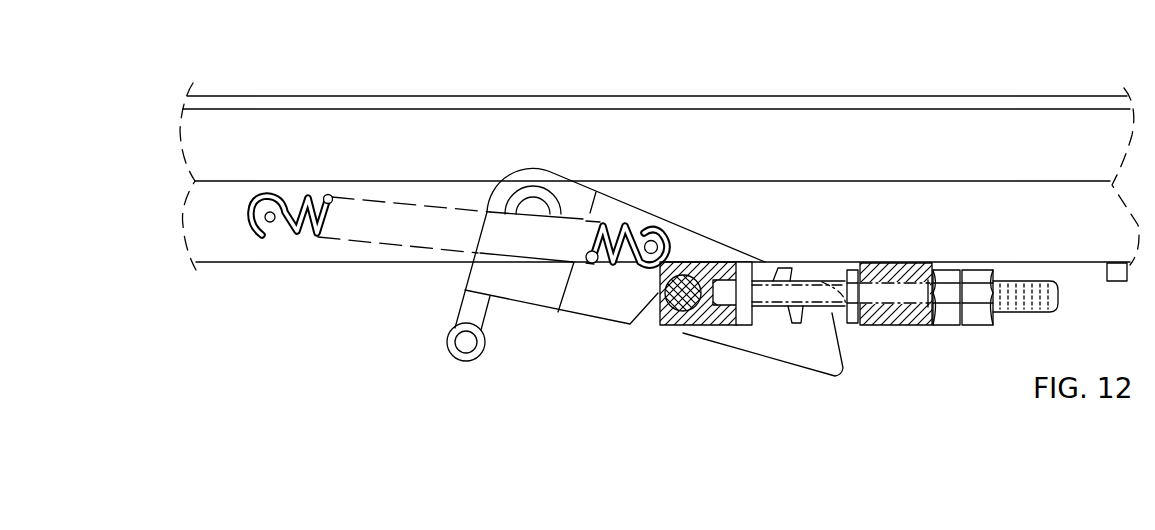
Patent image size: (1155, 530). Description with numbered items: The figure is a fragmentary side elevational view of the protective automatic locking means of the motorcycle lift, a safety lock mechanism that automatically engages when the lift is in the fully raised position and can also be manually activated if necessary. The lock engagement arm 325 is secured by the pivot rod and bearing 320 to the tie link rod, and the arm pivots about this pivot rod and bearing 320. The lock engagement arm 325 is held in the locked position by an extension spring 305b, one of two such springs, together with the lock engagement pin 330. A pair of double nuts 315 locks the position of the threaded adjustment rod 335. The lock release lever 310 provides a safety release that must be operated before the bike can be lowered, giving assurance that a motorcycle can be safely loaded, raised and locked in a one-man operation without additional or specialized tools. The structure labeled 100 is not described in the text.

The rail / guide member 100 is at (398, 108).
The extension spring 305b is at (295, 233).
The lock release lever 310 is at (445, 339).
The double nuts 315 is at (977, 327).
The pivot rod and bearing 320 is at (537, 193).
The lock engagement arm 325 is at (685, 228).
The lock engagement pin 330 is at (675, 315).
The threaded adjustment rod 335 is at (775, 290).